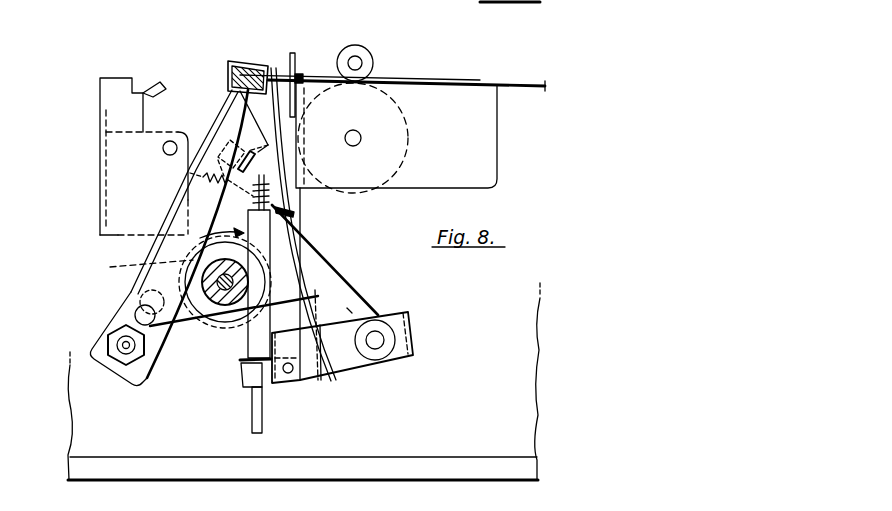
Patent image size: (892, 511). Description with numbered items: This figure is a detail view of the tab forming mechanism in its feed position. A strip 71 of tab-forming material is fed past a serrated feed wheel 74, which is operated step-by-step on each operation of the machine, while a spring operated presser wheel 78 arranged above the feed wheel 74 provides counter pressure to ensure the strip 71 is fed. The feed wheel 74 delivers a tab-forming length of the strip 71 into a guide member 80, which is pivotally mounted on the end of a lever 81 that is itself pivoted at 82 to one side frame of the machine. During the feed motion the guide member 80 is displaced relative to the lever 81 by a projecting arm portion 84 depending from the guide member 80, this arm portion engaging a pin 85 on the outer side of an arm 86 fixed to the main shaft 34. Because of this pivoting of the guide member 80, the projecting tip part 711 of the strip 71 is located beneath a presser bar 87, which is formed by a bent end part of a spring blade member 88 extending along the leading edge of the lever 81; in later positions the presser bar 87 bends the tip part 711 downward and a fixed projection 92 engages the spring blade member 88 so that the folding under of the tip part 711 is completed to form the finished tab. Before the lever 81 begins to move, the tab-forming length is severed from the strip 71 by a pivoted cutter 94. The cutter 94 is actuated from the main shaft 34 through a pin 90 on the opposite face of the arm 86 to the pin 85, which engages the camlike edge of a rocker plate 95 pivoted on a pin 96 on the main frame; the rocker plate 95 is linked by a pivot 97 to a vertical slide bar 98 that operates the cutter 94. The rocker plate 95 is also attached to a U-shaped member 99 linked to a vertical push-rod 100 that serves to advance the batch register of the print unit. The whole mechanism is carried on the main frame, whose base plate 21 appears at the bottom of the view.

The projecting tip part 711 is at (229, 63).
The presser bar 87 is at (239, 62).
The guide member 80 is at (275, 64).
The pivoted cutter 94 is at (296, 60).
The presser wheel 78 is at (366, 58).
The strip 71 is at (510, 84).
The fixed projection 92 is at (154, 90).
The spring blade member 88 is at (211, 143).
The serrated feed wheel 74 is at (398, 116).
The vertical slide bar 98 is at (300, 210).
The pin 85 is at (320, 254).
The projecting arm portion 84 is at (318, 296).
The rocker plate 95 is at (347, 308).
The U-shaped member 99 is at (404, 343).
The pin 96 is at (376, 343).
The pivot 97 is at (290, 377).
The vertical push-rod 100 is at (263, 425).
The base plate 21 is at (442, 458).
The lever 81 is at (153, 254).
The pin 90 is at (136, 306).
The pivot 82 is at (126, 350).
The arm 86 is at (183, 320).
The main shaft 34 is at (222, 316).